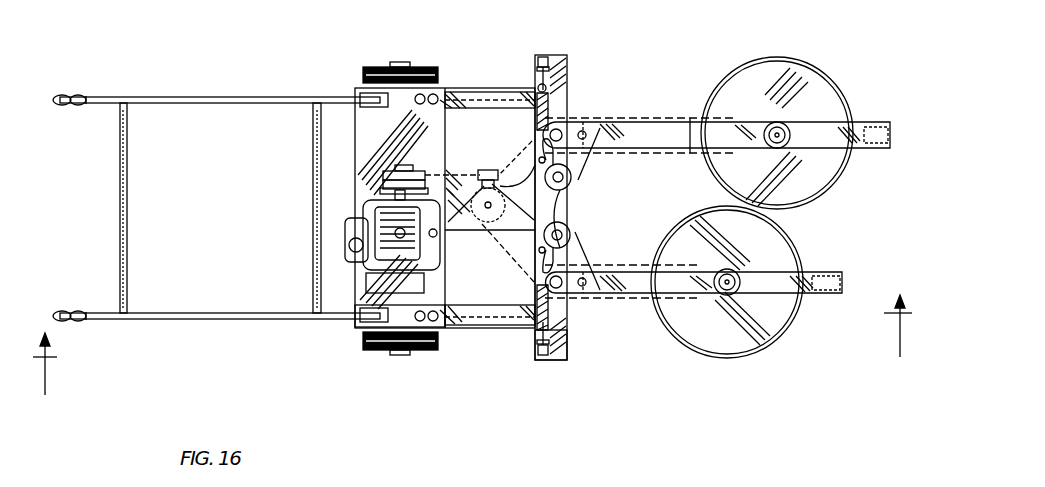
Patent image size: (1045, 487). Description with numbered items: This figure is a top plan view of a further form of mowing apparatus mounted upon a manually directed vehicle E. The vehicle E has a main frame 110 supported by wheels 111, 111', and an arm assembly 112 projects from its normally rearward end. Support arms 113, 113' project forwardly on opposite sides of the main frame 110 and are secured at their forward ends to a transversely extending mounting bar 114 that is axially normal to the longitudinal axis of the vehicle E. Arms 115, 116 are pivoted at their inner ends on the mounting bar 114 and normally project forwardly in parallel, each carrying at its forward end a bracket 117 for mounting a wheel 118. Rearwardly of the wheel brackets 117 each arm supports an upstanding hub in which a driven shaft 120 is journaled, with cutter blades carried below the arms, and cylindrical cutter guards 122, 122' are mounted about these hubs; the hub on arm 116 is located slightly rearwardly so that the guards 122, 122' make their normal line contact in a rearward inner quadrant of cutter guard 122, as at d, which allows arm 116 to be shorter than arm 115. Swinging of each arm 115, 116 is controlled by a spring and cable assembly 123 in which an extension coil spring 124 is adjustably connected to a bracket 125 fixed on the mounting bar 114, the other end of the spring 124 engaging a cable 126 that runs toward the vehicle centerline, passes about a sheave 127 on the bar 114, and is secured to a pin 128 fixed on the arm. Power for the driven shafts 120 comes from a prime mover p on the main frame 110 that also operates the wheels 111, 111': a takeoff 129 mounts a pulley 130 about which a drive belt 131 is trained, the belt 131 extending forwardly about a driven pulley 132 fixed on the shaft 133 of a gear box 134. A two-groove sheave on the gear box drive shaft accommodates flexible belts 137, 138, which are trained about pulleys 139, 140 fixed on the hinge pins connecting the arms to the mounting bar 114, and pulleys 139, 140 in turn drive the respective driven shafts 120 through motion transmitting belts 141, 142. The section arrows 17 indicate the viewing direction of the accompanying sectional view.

The section line arrows 17- 17 is at (472, 360).
The main frame 110 is at (355, 130).
The wheel 111 is at (397, 44).
The wheel 111' is at (361, 374).
The arm assembly 112 is at (118, 200).
The support arm 113 is at (532, 181).
The support arm 113' is at (502, 380).
The mounting bar 114 is at (565, 62).
The arm 115 is at (703, 100).
The arm 116 is at (790, 320).
The bracket 117 is at (880, 124).
The wheel 118 is at (855, 150).
The driven shaft 120 is at (795, 120).
The cutter guard 122 is at (722, 107).
The cutter guard 122' is at (708, 267).
The spring and cable assembly 123 is at (590, 170).
The extension coil spring 124 is at (550, 92).
The bracket 125 is at (568, 50).
The cable 126 is at (578, 165).
The sheave 127 is at (585, 182).
The pin 128 is at (603, 126).
The takeoff 129 is at (385, 195).
The pulley 130 is at (380, 180).
The drive belt 131 is at (380, 172).
The driven pulley 132 is at (490, 168).
The shaft 133 is at (535, 150).
The gear box 134 is at (491, 233).
The flexible belt 137 is at (524, 270).
The flexible belt 138 is at (567, 110).
The pulley 139 is at (560, 340).
The pulley 140 is at (580, 125).
The motion transmitting belt 141 is at (645, 300).
The motion transmitting belt 142 is at (680, 118).
The manually directed vehicle E is at (147, 80).
The prime mover p is at (355, 300).
The line contact point d is at (718, 190).